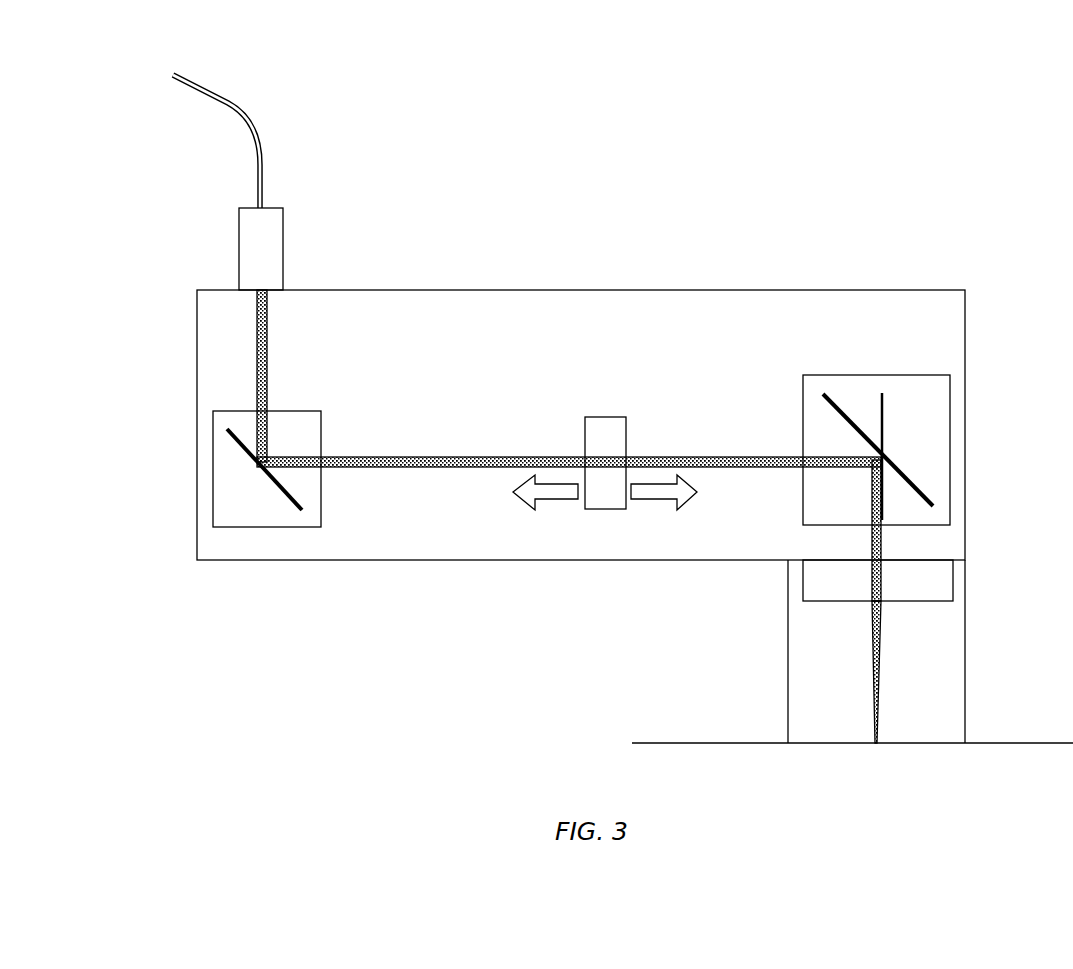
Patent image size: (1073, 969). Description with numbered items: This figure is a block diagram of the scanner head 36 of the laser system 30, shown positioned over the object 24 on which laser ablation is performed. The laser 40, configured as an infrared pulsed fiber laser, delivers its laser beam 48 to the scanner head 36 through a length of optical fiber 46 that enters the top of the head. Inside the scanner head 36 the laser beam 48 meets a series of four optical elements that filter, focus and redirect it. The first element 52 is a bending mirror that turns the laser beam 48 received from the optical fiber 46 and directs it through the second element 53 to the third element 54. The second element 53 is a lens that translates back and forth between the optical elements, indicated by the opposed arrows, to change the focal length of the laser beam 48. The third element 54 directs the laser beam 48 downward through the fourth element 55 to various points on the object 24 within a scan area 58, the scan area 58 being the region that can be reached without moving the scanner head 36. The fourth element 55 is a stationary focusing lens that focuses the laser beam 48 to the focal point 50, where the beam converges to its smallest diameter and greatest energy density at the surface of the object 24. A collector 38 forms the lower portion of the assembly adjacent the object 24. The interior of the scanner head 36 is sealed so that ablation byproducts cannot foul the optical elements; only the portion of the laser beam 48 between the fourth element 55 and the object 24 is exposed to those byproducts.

The object 24 is at (1045, 743).
The laser system 30 is at (876, 133).
The scanner head 36 is at (927, 283).
The collector 38 is at (972, 617).
The laser 40 is at (224, 82).
The optical fiber 46 is at (252, 125).
The laser beam 48 is at (403, 457).
The focal point 50 is at (879, 735).
The first element 52 is at (212, 492).
The second element 53 is at (605, 509).
The third element 54 is at (950, 424).
The fourth element 55 is at (953, 575).
The scan area 58 is at (815, 740).